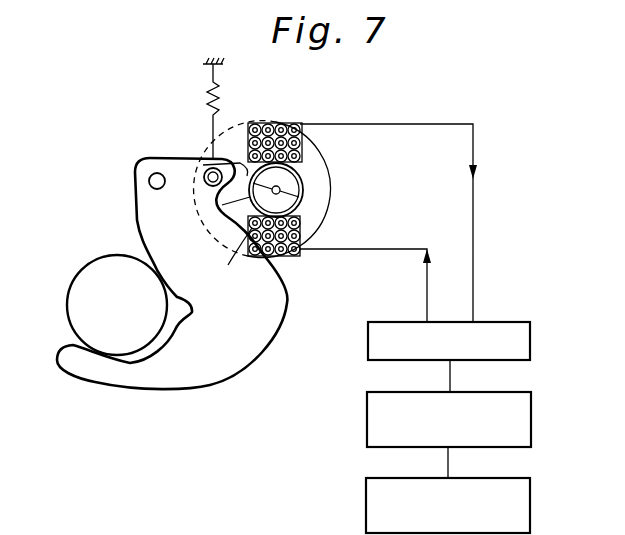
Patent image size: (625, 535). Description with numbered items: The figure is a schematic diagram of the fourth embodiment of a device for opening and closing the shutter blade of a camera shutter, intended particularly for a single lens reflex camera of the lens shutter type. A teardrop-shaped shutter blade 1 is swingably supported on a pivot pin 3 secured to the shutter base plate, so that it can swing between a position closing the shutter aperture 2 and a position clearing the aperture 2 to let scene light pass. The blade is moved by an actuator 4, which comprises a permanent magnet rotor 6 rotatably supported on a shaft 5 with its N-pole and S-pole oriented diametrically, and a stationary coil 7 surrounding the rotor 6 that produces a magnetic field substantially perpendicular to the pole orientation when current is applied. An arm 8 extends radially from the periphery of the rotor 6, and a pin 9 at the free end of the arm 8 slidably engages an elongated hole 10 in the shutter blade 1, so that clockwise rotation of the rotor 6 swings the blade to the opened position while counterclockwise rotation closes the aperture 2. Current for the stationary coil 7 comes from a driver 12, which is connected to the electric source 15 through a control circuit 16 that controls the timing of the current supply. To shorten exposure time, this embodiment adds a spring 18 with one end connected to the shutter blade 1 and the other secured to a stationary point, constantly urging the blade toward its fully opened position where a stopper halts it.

The shutter blade 1 is at (173, 377).
The shutter aperture 2 is at (107, 367).
The pivot pin 3 is at (149, 179).
The actuator 4 is at (324, 108).
The shaft 5 is at (246, 170).
The permanent magnet rotor 6 is at (298, 177).
The stationary coil 7 is at (282, 123).
The arm 8 is at (233, 258).
The pin 9 is at (204, 176).
The elongated hole 10 is at (222, 168).
The driver 12 is at (532, 340).
The electric source 15 is at (531, 503).
The control circuit 16 is at (532, 418).
The spring 18 is at (210, 95).